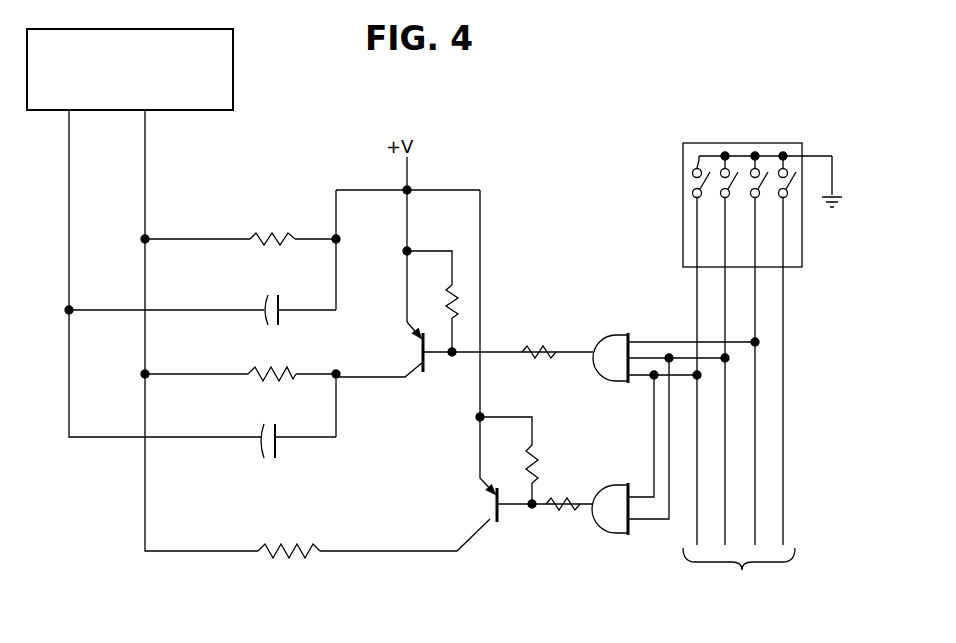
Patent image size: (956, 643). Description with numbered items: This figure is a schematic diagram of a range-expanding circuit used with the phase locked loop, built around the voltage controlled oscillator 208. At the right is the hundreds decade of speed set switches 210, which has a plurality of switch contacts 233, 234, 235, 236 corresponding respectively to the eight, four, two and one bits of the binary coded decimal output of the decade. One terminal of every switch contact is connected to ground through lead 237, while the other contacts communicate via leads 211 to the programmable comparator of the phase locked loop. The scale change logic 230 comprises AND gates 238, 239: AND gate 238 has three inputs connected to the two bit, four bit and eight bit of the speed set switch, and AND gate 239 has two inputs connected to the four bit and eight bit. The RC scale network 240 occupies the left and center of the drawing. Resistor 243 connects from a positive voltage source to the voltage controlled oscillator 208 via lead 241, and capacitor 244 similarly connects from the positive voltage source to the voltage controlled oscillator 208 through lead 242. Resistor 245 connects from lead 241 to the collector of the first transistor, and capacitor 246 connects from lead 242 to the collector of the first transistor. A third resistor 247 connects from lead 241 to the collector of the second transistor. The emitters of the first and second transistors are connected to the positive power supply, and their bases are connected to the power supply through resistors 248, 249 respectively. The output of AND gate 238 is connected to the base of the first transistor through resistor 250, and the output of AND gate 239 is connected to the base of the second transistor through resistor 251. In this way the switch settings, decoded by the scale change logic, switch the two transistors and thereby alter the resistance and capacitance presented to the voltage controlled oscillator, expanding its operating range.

The voltage controlled oscillator 208 is at (177, 30).
The hundreds decade of speed set switches 210 is at (729, 202).
The leads 211 is at (739, 400).
The scale change logic 230 is at (668, 398).
The switch contact 233 is at (693, 197).
The switch contact 234 is at (722, 197).
The switch contact 235 is at (759, 197).
The switch contact 236 is at (786, 197).
The lead 237 is at (832, 155).
The AND gate 238 is at (608, 382).
The AND gate 239 is at (622, 486).
The RC scale network 240 is at (516, 250).
The lead 241 is at (147, 191).
The lead 242 is at (68, 202).
The resistor 243 is at (280, 236).
The capacitor 244 is at (262, 296).
The resistor 245 is at (258, 367).
The capacitor 246 is at (276, 456).
The resistor 247 is at (308, 546).
The resistor 248 is at (447, 292).
The resistor 249 is at (538, 466).
The resistor 250 is at (538, 346).
The resistor 251 is at (563, 509).